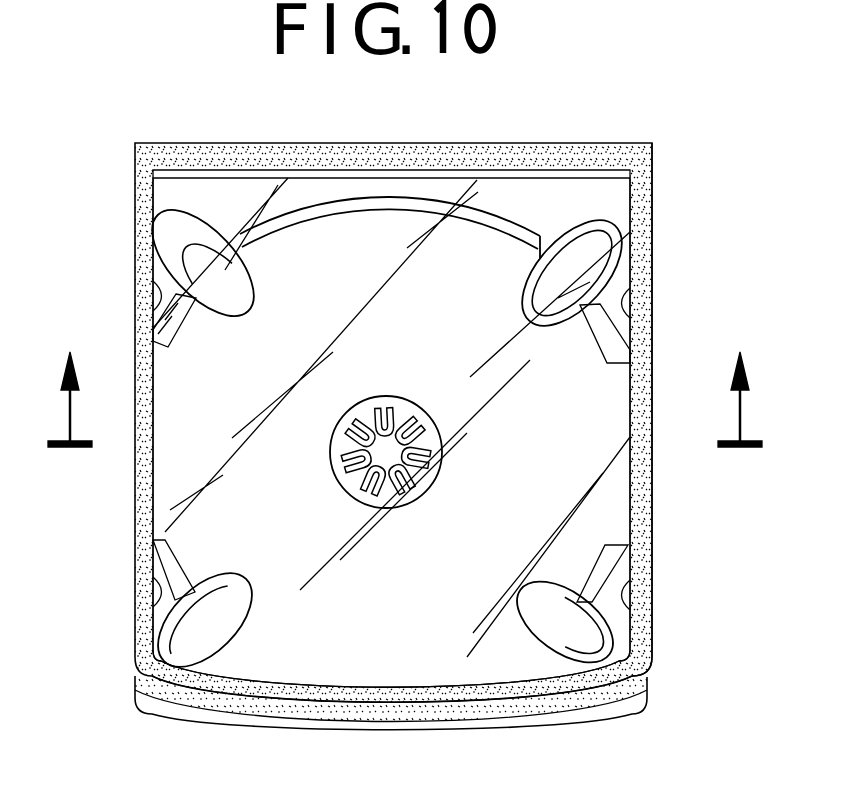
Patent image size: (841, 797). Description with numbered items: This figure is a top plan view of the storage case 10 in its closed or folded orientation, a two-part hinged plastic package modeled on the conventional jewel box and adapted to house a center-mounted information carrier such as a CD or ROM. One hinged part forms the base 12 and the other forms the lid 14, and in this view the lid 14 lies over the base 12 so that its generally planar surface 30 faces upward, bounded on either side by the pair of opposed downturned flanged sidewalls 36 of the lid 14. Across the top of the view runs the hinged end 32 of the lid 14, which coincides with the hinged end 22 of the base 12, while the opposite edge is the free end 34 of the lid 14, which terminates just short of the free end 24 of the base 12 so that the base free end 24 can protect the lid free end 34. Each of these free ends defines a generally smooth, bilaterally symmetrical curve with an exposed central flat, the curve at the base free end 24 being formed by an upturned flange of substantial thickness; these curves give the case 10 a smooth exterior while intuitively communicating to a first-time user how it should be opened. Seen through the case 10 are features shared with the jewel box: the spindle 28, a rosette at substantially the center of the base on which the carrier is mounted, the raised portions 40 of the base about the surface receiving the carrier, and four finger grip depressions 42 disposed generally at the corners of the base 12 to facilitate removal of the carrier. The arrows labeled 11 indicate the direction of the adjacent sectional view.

The storage case 10 is at (178, 134).
The section line of FIG. 11 is at (406, 424).
The base 12 is at (647, 683).
The lid 14 is at (644, 641).
The hinged end 22 is at (430, 178).
The free end 24 is at (325, 727).
The spindle 28 is at (418, 492).
The planar surface 30 is at (425, 378).
The hinged end 32 is at (341, 157).
The free end 34 is at (360, 687).
The downturned flanged sidewalls 36 is at (133, 373).
The raised portions 40 is at (248, 202).
The finger grip depressions 42 is at (242, 303).